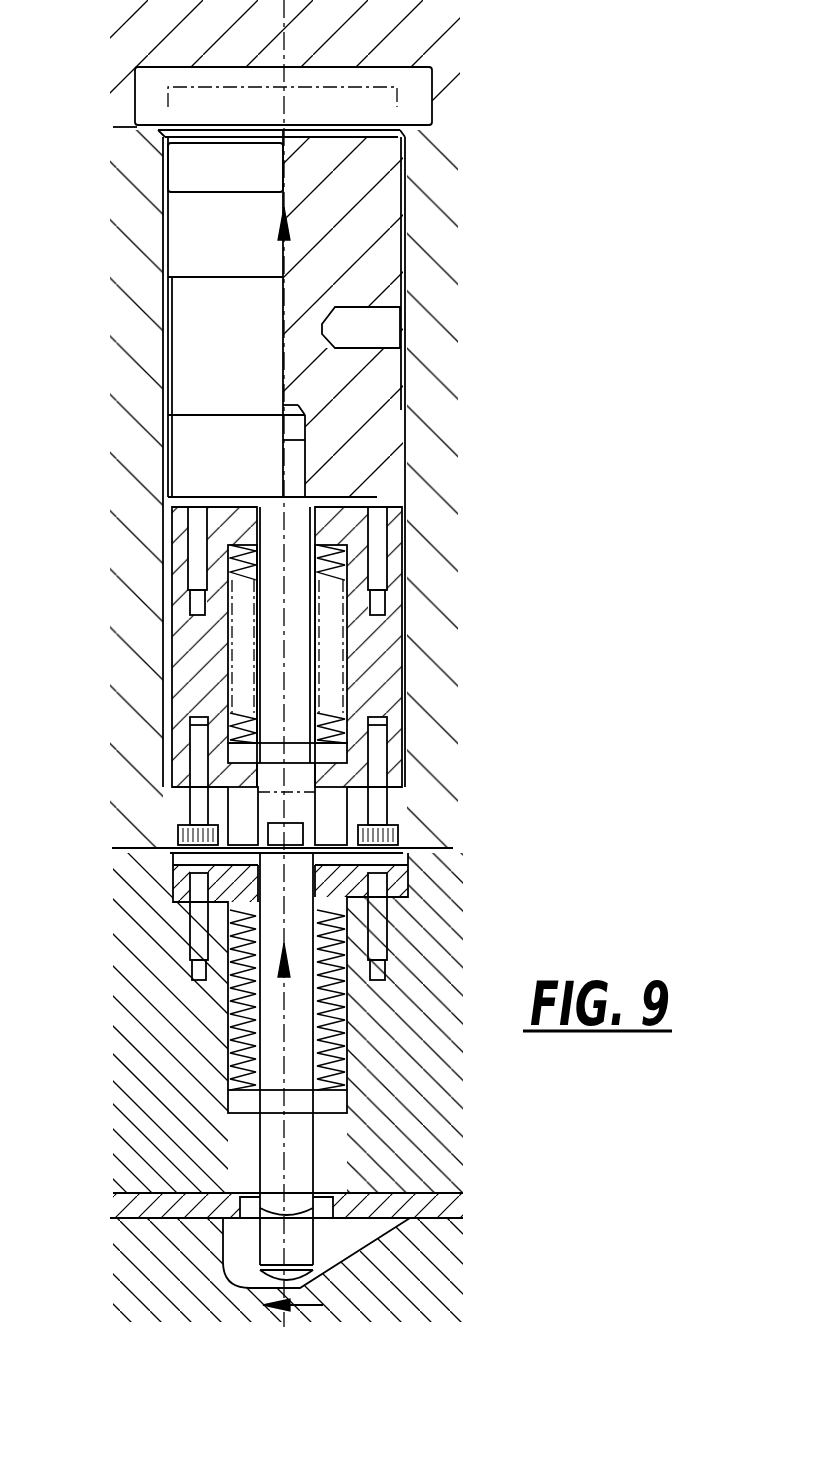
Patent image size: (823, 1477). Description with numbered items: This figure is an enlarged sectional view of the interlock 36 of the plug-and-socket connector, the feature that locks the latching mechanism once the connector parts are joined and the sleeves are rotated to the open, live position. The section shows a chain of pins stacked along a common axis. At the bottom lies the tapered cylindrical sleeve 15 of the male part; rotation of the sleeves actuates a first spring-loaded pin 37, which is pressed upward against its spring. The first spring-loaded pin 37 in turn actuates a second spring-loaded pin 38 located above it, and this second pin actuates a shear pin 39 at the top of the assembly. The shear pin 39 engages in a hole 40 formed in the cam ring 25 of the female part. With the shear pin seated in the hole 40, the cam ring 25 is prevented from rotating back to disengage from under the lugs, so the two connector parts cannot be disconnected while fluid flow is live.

The tapered cylindrical sleeve 15 is at (435, 1275).
The cam ring 25 is at (447, 49).
The interlock 36 is at (481, 627).
The first spring-loaded pin 37 is at (300, 1168).
The second spring-loaded pin 38 is at (297, 688).
The shear pin 39 is at (383, 268).
The hole 40 is at (143, 100).